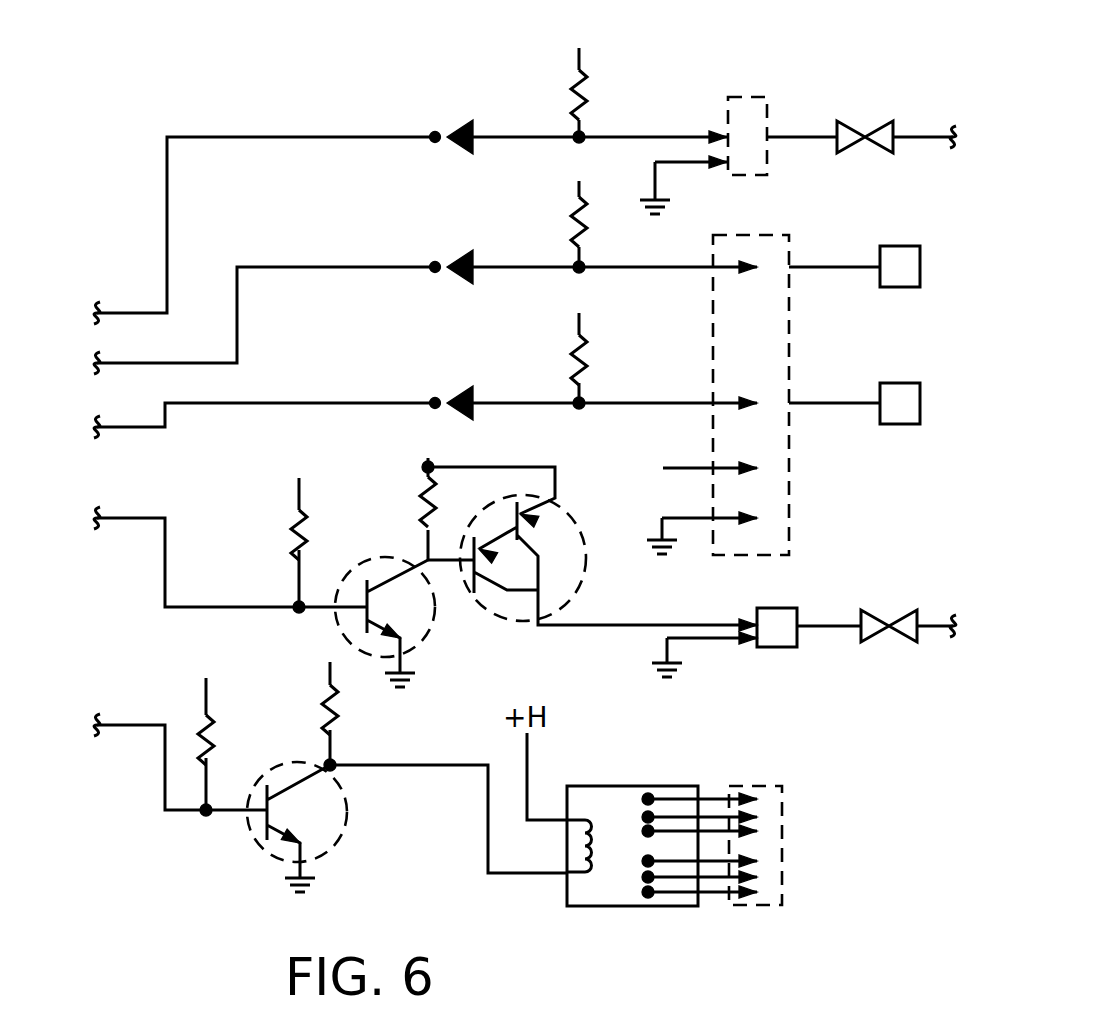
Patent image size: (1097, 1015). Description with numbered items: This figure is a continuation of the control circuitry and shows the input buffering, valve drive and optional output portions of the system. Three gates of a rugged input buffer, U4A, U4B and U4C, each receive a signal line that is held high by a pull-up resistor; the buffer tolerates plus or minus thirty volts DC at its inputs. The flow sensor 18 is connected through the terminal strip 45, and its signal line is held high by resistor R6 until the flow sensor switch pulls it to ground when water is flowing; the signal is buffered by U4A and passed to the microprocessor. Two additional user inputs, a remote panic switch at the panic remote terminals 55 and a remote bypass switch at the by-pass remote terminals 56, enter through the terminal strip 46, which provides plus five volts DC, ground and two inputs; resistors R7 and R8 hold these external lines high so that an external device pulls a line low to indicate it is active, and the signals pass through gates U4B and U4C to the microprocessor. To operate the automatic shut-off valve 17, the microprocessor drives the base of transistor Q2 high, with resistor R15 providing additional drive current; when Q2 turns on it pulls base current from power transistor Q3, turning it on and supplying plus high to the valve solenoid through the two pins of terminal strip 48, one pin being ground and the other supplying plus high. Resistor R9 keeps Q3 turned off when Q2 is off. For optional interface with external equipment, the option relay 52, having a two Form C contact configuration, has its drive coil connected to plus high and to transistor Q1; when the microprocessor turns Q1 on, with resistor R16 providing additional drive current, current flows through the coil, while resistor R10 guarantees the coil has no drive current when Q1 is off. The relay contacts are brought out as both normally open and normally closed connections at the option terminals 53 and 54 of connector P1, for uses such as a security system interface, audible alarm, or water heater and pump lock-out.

The gate of buffer U4 U4A is at (456, 120).
The gate of buffer U4 U4B is at (456, 251).
The gate of buffer U4 U4C is at (456, 387).
The resistor R6 is at (585, 104).
The resistor R7 is at (575, 224).
The resistor R8 is at (585, 364).
The resistor R9 is at (422, 520).
The resistor R10 is at (338, 702).
The resistor R15 is at (293, 528).
The resistor R16 is at (214, 740).
The transistor Q1 is at (346, 812).
The transistor Q2 is at (425, 627).
The power transistor Q3 is at (587, 556).
The terminal strip 45 is at (752, 97).
The flow sensor 18 is at (857, 132).
The terminal strip 46 is at (790, 357).
The panic, remote terminals 55 is at (905, 246).
The by-pass, remote terminals 56 is at (905, 383).
The automatic shut-off valve 17 is at (876, 612).
The terminal strip 48 is at (778, 647).
The option relay 52 is at (635, 907).
The option terminals 53 is at (782, 882).
The option terminals 54 is at (782, 793).
The connector P1 is at (753, 907).